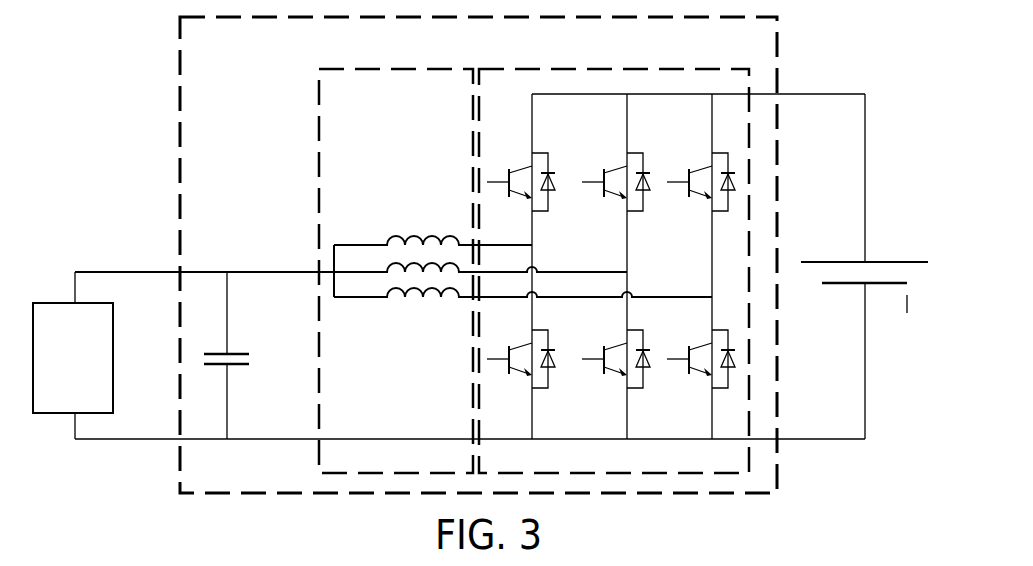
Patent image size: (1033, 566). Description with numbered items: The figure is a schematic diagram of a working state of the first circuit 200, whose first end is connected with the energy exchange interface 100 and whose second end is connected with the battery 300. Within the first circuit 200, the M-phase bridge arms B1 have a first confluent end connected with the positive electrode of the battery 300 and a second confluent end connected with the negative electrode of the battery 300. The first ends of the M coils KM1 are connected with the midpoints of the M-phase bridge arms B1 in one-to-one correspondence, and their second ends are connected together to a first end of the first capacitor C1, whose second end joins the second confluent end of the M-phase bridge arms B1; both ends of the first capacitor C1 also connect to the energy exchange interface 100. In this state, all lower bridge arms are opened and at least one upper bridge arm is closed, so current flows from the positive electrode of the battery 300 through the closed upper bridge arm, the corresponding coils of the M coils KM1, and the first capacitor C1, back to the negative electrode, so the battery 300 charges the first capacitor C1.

The first circuit 200 is at (449, 255).
The energy exchange interface 100 is at (73, 358).
The battery 300 is at (877, 262).
The first capacitor C1 is at (238, 350).
The M coils KM1 is at (363, 69).
The M-phase bridge arms B1 is at (542, 69).